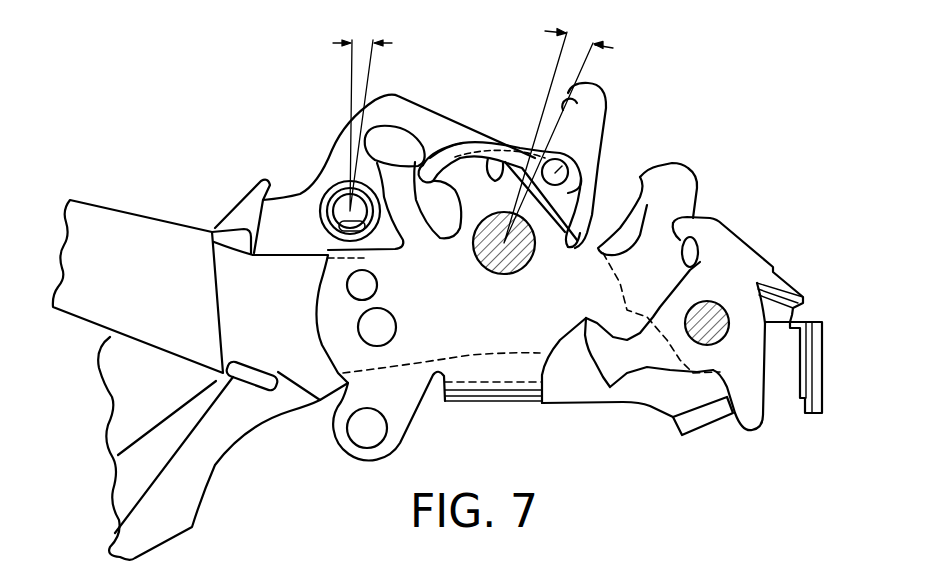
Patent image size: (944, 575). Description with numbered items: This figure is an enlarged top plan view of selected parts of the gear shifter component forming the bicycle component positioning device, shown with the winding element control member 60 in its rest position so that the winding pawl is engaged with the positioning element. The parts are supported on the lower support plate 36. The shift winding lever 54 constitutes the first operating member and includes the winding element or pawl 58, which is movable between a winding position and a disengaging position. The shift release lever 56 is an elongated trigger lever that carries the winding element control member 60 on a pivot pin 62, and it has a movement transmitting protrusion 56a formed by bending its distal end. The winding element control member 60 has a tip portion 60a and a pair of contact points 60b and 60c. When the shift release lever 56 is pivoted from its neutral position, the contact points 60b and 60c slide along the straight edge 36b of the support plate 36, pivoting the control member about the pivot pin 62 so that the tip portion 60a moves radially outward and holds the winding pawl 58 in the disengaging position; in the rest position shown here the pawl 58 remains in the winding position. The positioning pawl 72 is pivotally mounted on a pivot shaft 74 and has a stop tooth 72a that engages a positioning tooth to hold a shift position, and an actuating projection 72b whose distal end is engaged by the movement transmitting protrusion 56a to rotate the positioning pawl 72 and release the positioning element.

The support plate 36 is at (698, 178).
The edge of the support plate 36b is at (605, 170).
The shift winding lever 54 is at (205, 528).
The shift release lever 56 is at (121, 200).
The movement transmitting protrusion 56a is at (710, 426).
The winding element or pawl 58 is at (340, 178).
The winding element control member 60 is at (460, 138).
The tip portion 60a is at (434, 150).
The contact point 60b is at (506, 235).
The contact point 60c is at (582, 186).
The pivot pin 62 is at (600, 90).
The positioning pawl 72 is at (738, 233).
The stop tooth 72a is at (585, 335).
The actuating projection 72b is at (752, 430).
The pivot shaft 74 is at (692, 340).